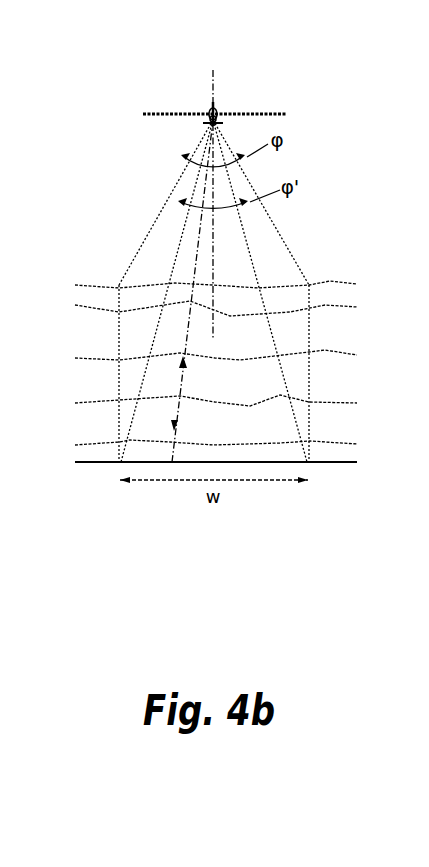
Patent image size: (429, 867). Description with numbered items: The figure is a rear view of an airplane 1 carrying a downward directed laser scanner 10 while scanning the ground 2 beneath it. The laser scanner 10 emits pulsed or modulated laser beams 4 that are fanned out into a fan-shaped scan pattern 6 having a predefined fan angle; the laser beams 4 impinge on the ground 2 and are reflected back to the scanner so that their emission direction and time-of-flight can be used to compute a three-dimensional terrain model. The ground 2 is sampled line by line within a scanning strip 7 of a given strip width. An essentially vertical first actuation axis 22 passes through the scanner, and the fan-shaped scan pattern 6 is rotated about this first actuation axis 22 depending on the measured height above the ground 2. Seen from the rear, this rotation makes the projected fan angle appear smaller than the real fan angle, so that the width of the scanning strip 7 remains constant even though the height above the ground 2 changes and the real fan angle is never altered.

The airplane 1 is at (193, 97).
The laser scanner 10 is at (190, 125).
The ground 2 is at (83, 344).
The first actuation axis 22 is at (214, 322).
The laser beams 4 is at (181, 391).
The fan-shaped scan pattern 6 is at (259, 283).
The scanning strip 7 is at (309, 336).